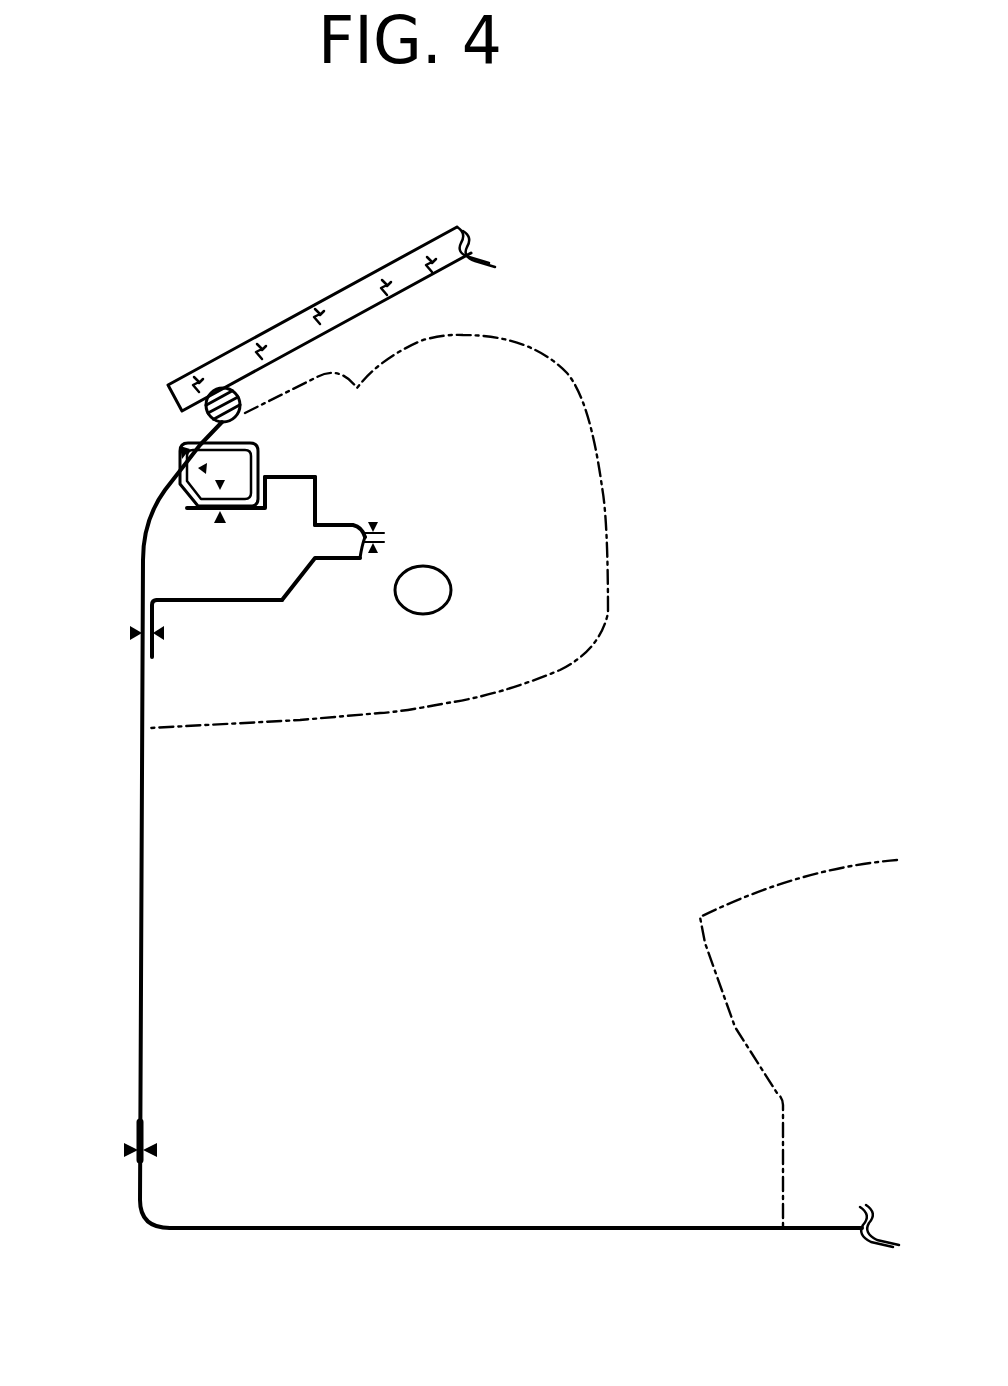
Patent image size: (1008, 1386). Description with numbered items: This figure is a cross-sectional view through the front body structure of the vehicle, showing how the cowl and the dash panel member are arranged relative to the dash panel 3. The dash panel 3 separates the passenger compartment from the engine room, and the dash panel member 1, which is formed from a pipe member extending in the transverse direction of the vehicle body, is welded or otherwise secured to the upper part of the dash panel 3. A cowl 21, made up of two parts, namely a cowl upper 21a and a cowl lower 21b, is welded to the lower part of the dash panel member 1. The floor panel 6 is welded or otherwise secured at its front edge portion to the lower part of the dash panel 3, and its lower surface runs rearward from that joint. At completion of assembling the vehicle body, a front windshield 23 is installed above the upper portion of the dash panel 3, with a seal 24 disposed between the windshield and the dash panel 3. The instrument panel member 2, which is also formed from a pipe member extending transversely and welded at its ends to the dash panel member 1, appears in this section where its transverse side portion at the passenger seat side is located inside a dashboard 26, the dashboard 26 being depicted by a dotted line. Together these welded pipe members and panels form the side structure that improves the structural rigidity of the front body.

The dash panel member 1 is at (253, 442).
The instrument panel member 2 is at (452, 578).
The dash panel 3 is at (132, 898).
The floor panel 6 is at (458, 1233).
The cowl 21 is at (313, 583).
The cowl upper 21a is at (320, 505).
The cowl lower 21b is at (223, 605).
The front windshield 23 is at (272, 325).
The seal 24 is at (205, 420).
The dashboard 26 is at (607, 483).